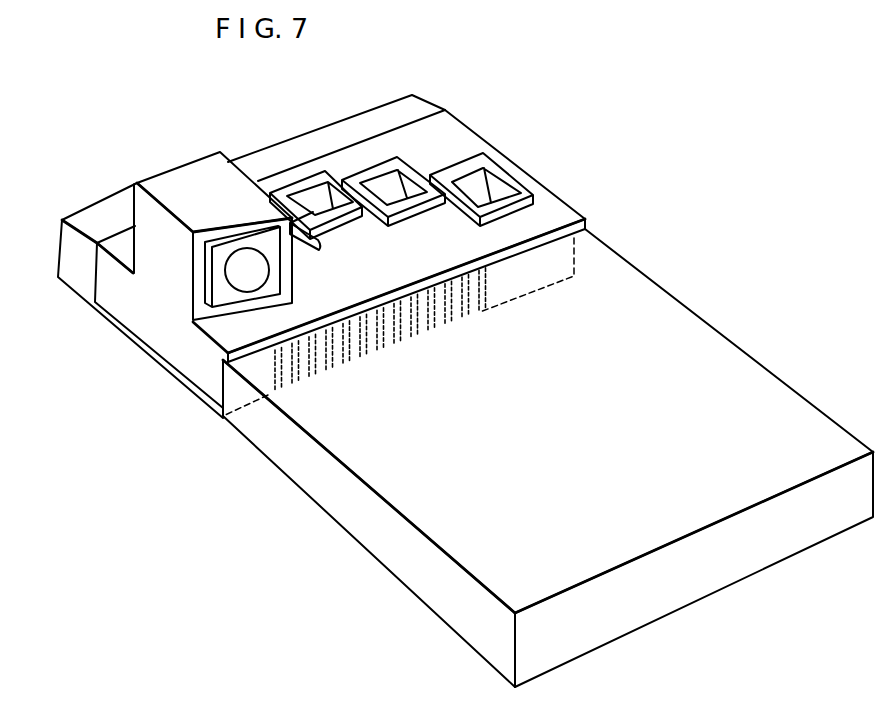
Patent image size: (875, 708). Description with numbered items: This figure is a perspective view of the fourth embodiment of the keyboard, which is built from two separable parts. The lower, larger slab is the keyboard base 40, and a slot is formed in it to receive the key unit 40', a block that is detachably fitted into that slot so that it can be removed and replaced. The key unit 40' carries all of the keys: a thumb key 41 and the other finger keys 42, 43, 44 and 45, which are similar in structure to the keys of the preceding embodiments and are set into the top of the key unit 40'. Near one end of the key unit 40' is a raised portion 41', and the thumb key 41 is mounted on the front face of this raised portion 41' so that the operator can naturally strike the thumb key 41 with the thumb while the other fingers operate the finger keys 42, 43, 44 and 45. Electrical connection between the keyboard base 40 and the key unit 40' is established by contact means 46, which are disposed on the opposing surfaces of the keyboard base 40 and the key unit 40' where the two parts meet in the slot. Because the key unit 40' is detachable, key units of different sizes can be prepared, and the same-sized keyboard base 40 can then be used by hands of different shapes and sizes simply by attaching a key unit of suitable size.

The keyboard base 40 is at (465, 391).
The key unit 40' is at (389, 254).
The thumb key 41 is at (265, 266).
The raised portion 41' is at (214, 219).
The finger key 42 is at (318, 250).
The finger key 43 is at (317, 192).
The finger key 44 is at (382, 167).
The finger key 45 is at (477, 180).
The contact means 46 is at (350, 356).